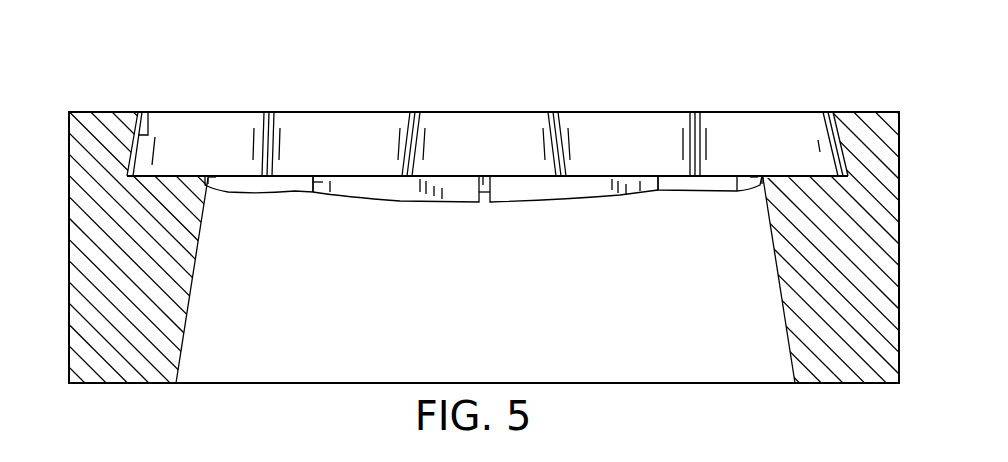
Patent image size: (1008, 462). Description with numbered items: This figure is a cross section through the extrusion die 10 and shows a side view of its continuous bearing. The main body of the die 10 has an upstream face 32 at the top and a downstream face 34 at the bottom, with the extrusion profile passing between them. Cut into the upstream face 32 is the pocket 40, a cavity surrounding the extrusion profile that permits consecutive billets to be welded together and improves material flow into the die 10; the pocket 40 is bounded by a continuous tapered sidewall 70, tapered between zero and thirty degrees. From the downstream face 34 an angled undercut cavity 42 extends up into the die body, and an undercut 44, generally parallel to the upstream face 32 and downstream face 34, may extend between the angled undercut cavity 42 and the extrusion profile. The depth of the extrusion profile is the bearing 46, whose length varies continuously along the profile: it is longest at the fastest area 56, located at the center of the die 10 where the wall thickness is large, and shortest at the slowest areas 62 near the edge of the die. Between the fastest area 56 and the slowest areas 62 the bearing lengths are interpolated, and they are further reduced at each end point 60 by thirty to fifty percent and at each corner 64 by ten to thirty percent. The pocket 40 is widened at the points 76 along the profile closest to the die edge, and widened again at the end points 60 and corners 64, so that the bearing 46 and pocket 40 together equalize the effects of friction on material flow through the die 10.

The extrusion die 10 is at (809, 401).
The upstream face 32 is at (104, 112).
The downstream face 34 is at (125, 383).
The pocket 40 is at (295, 110).
The angled undercut cavity 42 is at (180, 350).
The undercut 44 is at (207, 187).
The bearing 46 is at (391, 200).
The fastest area 56 is at (492, 187).
The end point 60 is at (217, 180).
The slowest area 62 is at (212, 180).
The corner 64 is at (328, 177).
The tapered sidewall 70 is at (149, 133).
The points closest to the edge of the die 76 is at (261, 189).